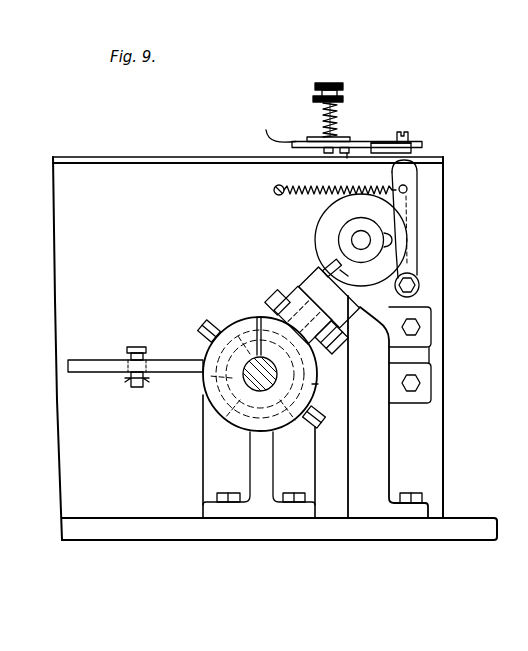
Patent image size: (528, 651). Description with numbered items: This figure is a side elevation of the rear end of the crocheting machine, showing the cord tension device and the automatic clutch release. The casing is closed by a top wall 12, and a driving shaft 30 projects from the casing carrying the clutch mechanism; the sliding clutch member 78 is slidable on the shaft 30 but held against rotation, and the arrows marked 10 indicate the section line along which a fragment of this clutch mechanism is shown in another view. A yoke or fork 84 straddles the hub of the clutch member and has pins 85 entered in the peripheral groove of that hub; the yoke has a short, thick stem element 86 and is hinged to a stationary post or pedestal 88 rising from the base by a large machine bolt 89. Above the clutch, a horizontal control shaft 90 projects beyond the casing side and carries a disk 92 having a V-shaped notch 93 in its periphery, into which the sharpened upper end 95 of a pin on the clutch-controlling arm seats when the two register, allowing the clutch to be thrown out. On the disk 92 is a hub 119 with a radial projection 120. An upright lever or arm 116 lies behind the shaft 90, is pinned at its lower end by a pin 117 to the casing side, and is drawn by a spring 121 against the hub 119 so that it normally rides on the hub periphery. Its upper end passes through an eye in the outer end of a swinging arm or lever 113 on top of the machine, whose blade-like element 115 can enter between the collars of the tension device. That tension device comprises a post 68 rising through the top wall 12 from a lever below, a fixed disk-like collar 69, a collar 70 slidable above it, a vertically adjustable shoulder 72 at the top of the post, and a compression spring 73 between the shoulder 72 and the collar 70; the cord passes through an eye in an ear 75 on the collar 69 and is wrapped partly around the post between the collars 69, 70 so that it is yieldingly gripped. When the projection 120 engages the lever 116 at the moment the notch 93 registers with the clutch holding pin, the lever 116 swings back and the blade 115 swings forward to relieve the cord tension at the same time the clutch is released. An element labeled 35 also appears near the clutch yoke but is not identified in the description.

The machine 10 is at (182, 280).
The top wall 12 is at (102, 158).
The driving shaft 30 is at (278, 371).
The disk edge 35 is at (330, 388).
The post 68 is at (344, 88).
The disk-like flange or collar 69 is at (347, 153).
The flange or collar 70 is at (350, 131).
The vertically-adjustable shoulder 72 is at (344, 100).
The compression spring 73 is at (322, 116).
The ear 75 is at (268, 132).
The sliding clutch member 78 is at (210, 388).
The yoke or fork 84 is at (223, 326).
The pins 85 is at (238, 329).
The stem element 86 is at (297, 290).
The post or pedestal 88 is at (382, 452).
The machine bolt 89 is at (273, 306).
The control shaft 90 is at (340, 237).
The disk 92 is at (318, 214).
The V-shaped notch 93 is at (318, 261).
The conical upper end 95 is at (355, 275).
The swinging arm or lever 113 is at (411, 140).
The blade-like element 115 is at (370, 139).
The upright lever or arm 116 is at (418, 193).
The pin 117 is at (420, 285).
The hub 119 is at (359, 229).
The radial projection 120 is at (404, 237).
The spring 121 is at (322, 180).